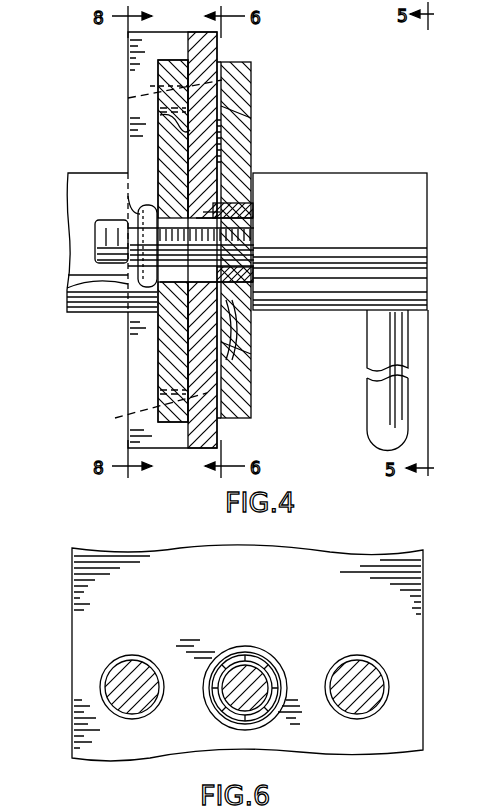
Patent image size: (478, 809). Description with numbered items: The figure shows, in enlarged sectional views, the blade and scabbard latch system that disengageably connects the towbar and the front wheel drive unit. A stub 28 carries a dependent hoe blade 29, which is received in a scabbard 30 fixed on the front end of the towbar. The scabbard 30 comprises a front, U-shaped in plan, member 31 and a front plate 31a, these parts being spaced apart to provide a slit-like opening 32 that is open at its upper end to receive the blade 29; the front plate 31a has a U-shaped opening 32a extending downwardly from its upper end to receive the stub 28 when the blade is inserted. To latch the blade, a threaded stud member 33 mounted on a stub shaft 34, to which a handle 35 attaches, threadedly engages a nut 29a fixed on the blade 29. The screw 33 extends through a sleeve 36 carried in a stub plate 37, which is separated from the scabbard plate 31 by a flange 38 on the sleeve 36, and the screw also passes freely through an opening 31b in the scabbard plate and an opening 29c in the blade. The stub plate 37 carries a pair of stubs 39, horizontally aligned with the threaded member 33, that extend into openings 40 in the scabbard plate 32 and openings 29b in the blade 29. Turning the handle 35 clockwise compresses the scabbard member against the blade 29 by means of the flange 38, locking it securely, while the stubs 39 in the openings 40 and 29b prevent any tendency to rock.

In FIG. 4, the stub 28 is at (95, 306).
In FIG. 4, the hoe blade 29 is at (160, 372).
In FIG. 4, the nut 29a is at (128, 196).
In FIG. 4, the openings 29b is at (128, 98).
In FIG. 4, the opening 29c is at (80, 283).
In FIG. 4, the scabbard 30 is at (188, 452).
In FIG. 6, the scabbard 30 is at (70, 754).
In FIG. 4, the front member 31 is at (212, 87).
In FIG. 6, the front member 31 is at (248, 594).
In FIG. 4, the front plate 31a is at (150, 86).
In FIG. 4, the spacer end 31b is at (205, 211).
In FIG. 4, the slit-like opening 32 is at (207, 133).
In FIG. 4, the U-shaped opening 32a is at (142, 168).
In FIG. 4, the threaded stud member 33 is at (253, 238).
In FIG. 6, the threaded stud member 33 is at (232, 700).
In FIG. 4, the stub shaft 34 is at (388, 186).
In FIG. 4, the handle 35 is at (380, 338).
In FIG. 4, the sleeve 36 is at (252, 200).
In FIG. 6, the sleeve 36 is at (276, 678).
In FIG. 4, the stub plate 37 is at (236, 390).
In FIG. 4, the flange 38 is at (251, 317).
In FIG. 6, the flange 38 is at (268, 655).
In FIG. 4, the stubs 39 is at (221, 110).
In FIG. 6, the stubs 39 is at (120, 672).
In FIG. 4, the openings 40 is at (226, 57).
In FIG. 6, the openings 40 is at (132, 655).